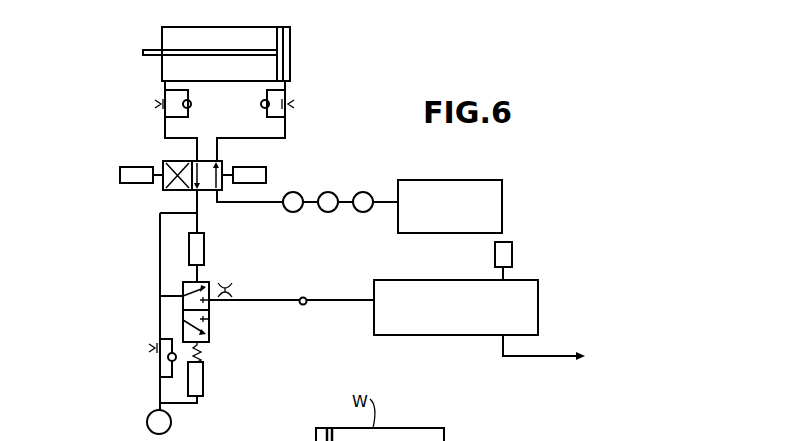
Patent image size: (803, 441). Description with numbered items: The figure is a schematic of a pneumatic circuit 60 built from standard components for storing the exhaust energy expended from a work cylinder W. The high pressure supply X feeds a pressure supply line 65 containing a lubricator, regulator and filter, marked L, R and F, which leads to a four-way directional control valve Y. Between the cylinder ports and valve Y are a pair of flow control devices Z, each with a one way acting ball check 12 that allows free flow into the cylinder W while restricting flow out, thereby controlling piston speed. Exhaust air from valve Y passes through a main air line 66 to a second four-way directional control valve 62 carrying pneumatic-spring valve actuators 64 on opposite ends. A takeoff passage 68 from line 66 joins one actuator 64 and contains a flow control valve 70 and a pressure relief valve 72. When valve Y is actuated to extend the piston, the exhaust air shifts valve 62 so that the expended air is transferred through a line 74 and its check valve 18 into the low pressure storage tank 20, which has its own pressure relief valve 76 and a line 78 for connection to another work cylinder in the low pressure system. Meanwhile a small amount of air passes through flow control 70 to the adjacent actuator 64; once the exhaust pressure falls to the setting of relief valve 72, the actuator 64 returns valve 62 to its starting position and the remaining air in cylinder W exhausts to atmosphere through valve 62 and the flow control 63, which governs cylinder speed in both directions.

The work cylinder W is at (290, 34).
The one way acting ball check 12 is at (261, 105).
The flow control devices Z is at (316, 109).
The four-way directional control valve Y is at (163, 162).
The main air line 66 is at (197, 213).
The pressure supply line 65 is at (270, 202).
The high pressure supply X is at (504, 193).
The takeoff passage 68 is at (158, 248).
The pneumatic-spring valve actuators 64 is at (225, 372).
The second four-way directional control valve 62 is at (209, 285).
The flow control 63 is at (233, 298).
The line 74 is at (263, 303).
The check valve 18 is at (302, 305).
The low pressure storage tank 20 is at (540, 295).
The pressure relief valve 76 is at (514, 259).
The line 78 is at (525, 358).
The circuit 60 is at (126, 291).
The flow control valve 70 is at (158, 368).
The pressure relief valve 72 is at (172, 423).